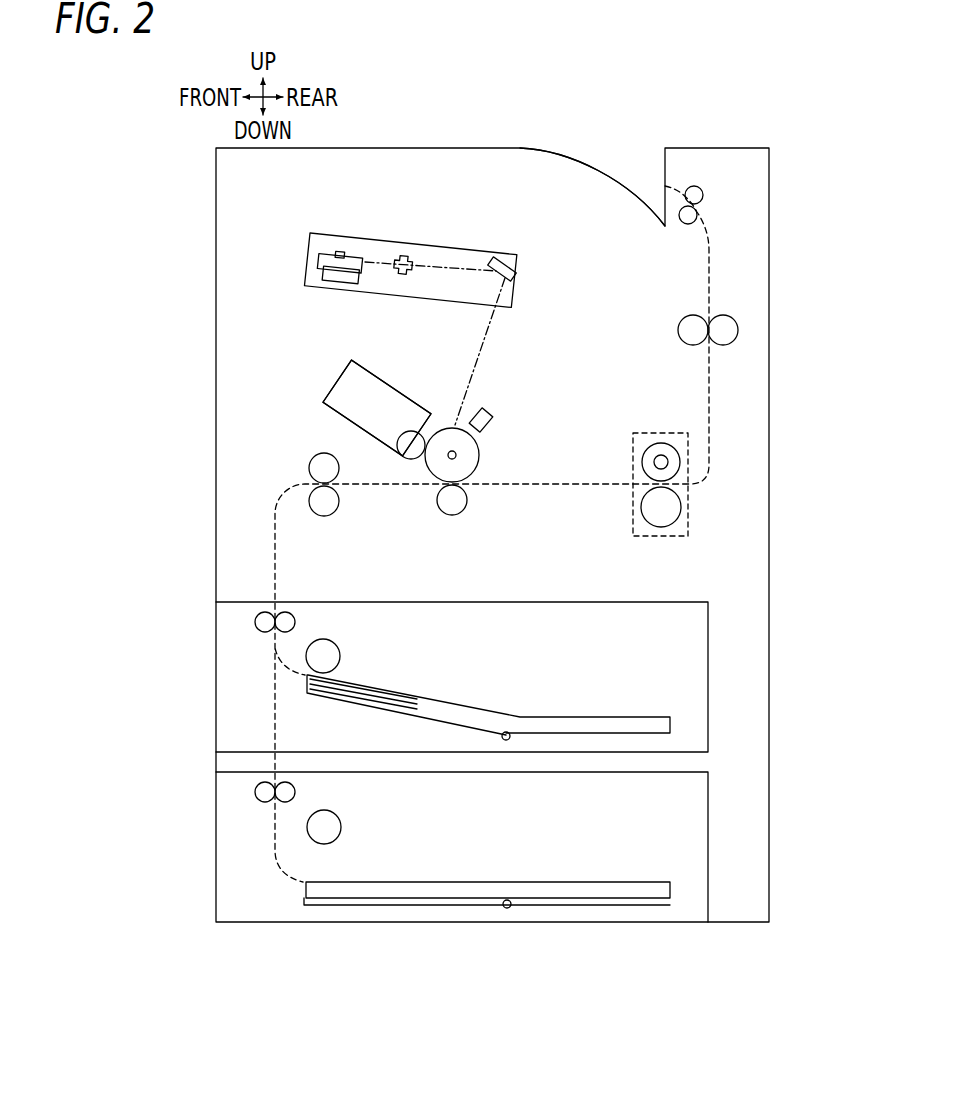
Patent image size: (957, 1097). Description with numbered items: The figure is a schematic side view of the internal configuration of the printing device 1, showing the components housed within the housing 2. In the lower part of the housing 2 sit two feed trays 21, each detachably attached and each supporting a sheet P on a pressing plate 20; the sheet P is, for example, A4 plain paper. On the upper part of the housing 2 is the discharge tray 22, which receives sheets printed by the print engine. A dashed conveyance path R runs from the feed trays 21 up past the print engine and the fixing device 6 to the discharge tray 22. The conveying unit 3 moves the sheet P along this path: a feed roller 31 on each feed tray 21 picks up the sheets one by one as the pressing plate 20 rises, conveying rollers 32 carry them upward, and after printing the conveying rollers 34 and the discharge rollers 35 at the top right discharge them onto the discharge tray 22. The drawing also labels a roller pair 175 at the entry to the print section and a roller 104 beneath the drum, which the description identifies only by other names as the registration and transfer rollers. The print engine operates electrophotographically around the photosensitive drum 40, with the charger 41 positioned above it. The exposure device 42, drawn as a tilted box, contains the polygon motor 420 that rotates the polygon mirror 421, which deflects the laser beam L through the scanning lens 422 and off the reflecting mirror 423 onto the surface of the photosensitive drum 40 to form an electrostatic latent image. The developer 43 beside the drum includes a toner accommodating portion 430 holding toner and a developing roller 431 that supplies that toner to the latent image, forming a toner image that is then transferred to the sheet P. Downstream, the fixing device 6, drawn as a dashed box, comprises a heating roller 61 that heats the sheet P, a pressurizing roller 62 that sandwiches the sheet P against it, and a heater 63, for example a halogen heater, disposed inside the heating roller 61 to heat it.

The printing device 1 is at (727, 86).
The housing 2 is at (390, 146).
The conveying unit 3 is at (287, 452).
The fixing device 6 is at (647, 460).
The pressing plate 20 is at (400, 713).
The feed tray 21 is at (710, 676).
The discharge tray 22 is at (593, 167).
The feed roller 31 is at (337, 727).
The conveying rollers 32 is at (261, 718).
The conveying rollers 34 is at (738, 330).
The discharge rollers 35 is at (703, 192).
The photosensitive drum 40 is at (481, 453).
The charger 41 is at (487, 408).
The exposure device 42 is at (418, 269).
The developer 43 is at (362, 402).
The heating roller 61 is at (642, 463).
The pressurizing roller 62 is at (642, 508).
The heater 63 is at (668, 455).
The transfer roller 104 is at (452, 517).
The registration rollers 175 is at (323, 519).
The polygon motor 420 is at (354, 296).
The polygon mirror 421 is at (346, 225).
The scanning lens 422 is at (404, 236).
The reflecting mirror 423 is at (519, 268).
The toner accommodating portion 430 is at (394, 391).
The developing roller 431 is at (399, 434).
The laser beam L is at (483, 345).
The sheet P is at (594, 716).
The conveyance path R is at (711, 277).